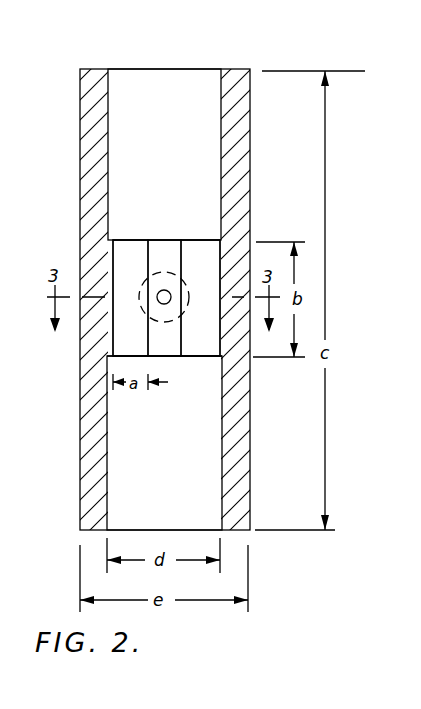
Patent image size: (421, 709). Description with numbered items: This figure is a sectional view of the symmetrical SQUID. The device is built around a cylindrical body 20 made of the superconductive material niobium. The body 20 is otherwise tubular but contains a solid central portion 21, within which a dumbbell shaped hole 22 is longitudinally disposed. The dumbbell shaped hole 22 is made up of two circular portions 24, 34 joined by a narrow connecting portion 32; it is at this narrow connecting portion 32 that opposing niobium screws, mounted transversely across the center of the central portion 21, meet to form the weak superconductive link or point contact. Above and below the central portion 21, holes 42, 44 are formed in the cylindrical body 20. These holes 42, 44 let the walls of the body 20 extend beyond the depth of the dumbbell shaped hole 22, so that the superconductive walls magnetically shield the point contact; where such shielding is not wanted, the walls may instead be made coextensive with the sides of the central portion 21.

The cylindrical body 20 is at (98, 110).
The hole 42 is at (188, 56).
The dumbbell shaped hole 22 is at (166, 260).
The circular portion 24 is at (128, 250).
The narrow connecting portion 32 is at (162, 250).
The circular portion 34 is at (196, 250).
The solid central portion 21 is at (198, 362).
The hole 44 is at (124, 471).